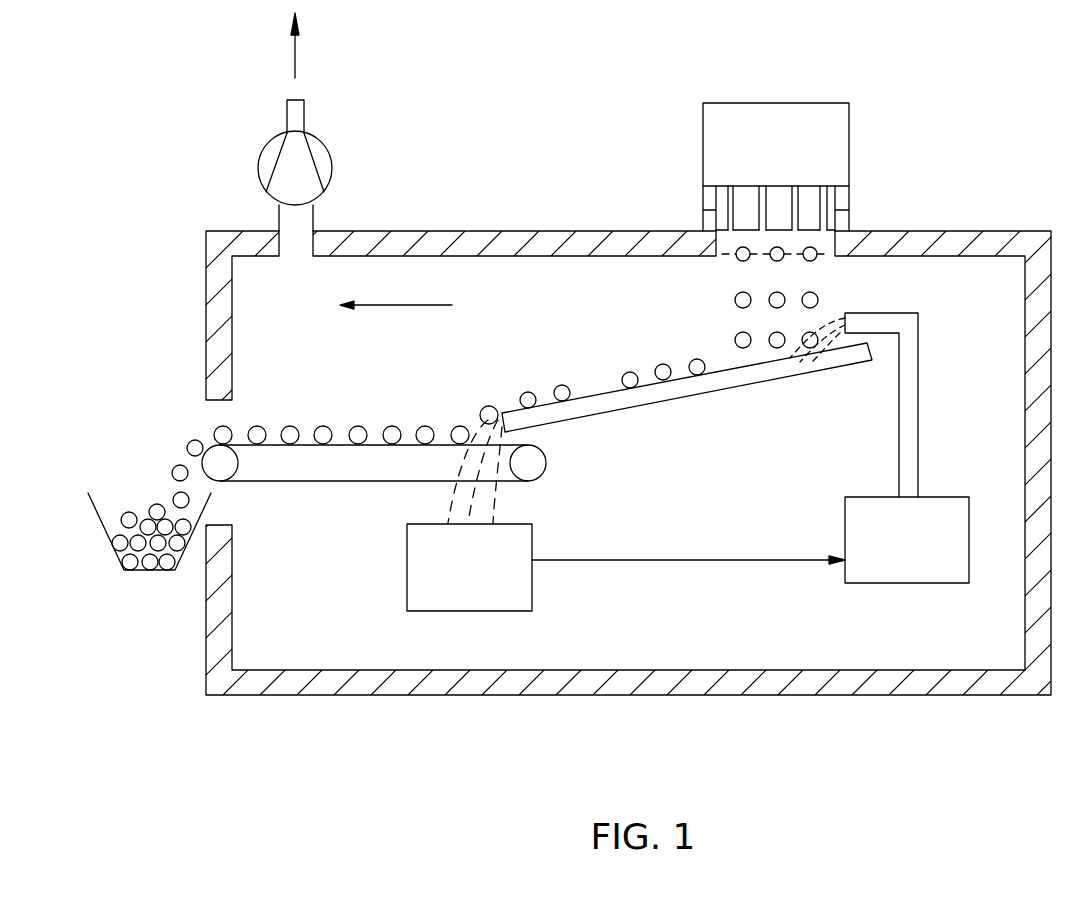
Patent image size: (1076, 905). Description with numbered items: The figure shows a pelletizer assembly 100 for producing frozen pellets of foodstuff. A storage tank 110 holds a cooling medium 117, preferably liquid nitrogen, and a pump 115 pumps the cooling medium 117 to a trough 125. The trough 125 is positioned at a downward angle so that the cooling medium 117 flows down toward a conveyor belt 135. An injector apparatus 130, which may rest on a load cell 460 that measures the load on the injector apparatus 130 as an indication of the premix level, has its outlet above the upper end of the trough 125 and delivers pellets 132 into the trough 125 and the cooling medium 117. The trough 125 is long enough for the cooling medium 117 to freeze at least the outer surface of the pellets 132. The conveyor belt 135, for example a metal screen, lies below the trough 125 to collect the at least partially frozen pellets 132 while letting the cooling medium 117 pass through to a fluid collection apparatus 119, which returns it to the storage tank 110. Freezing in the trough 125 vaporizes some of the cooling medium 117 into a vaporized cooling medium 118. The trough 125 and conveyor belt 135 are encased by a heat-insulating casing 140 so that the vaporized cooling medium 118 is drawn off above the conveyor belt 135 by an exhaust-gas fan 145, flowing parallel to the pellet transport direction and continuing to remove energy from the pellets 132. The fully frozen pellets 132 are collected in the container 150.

The pelletizer assembly 100 is at (125, 131).
The storage tank 110 is at (920, 585).
The pump 115 is at (918, 432).
The cooling medium 117 is at (470, 505).
The fluid collection apparatus 119 is at (468, 611).
The vaporized cooling medium 118 is at (417, 305).
The trough 125 is at (668, 400).
The injector apparatus 130 is at (849, 141).
The pellets 132 is at (733, 300).
The conveyor belt 135 is at (322, 483).
The heat-insulating casing 140 is at (542, 697).
The exhaust-gas fan 145 is at (329, 153).
The container 150 is at (96, 517).
The load cell 460 is at (849, 222).